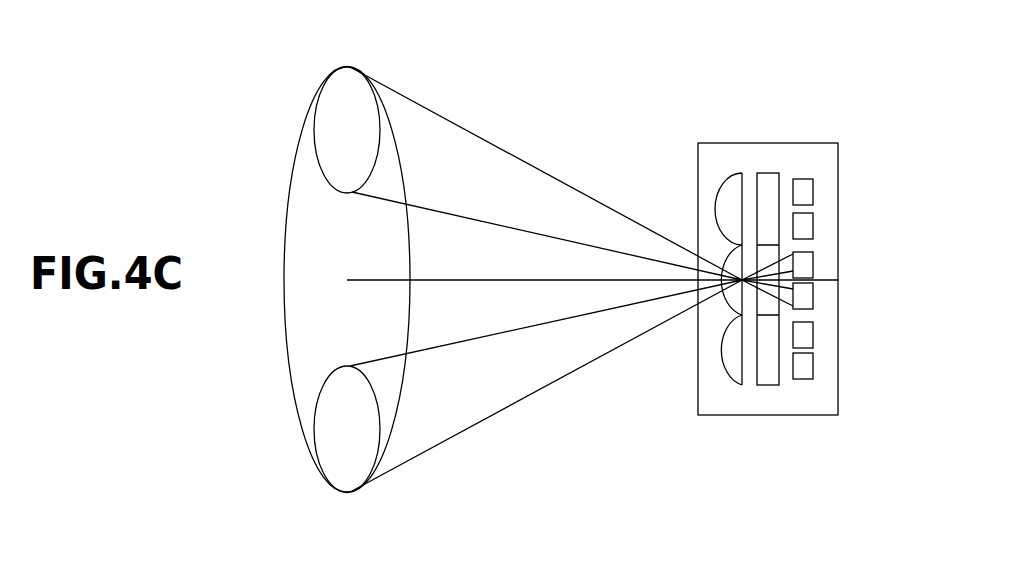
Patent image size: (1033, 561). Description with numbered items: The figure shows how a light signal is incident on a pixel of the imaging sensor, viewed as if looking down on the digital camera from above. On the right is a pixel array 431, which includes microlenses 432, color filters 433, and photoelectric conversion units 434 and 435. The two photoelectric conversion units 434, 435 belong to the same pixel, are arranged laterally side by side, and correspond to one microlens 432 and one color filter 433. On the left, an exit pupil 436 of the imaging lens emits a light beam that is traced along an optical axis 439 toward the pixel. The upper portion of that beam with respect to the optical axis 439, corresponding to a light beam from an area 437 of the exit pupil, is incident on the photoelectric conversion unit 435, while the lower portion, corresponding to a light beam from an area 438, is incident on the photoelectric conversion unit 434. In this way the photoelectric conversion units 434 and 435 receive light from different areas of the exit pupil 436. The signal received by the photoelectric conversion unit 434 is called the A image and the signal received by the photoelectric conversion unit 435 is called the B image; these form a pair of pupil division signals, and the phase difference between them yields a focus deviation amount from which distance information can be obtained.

The pixel array 431 is at (840, 165).
The microlens 432 is at (732, 172).
The color filter 433 is at (771, 172).
The photoelectric conversion unit 434 is at (814, 258).
The photoelectric conversion unit 435 is at (814, 295).
The exit pupil 436 is at (410, 172).
The area 437 is at (349, 65).
The area 438 is at (348, 494).
The optical axis 439 is at (446, 279).